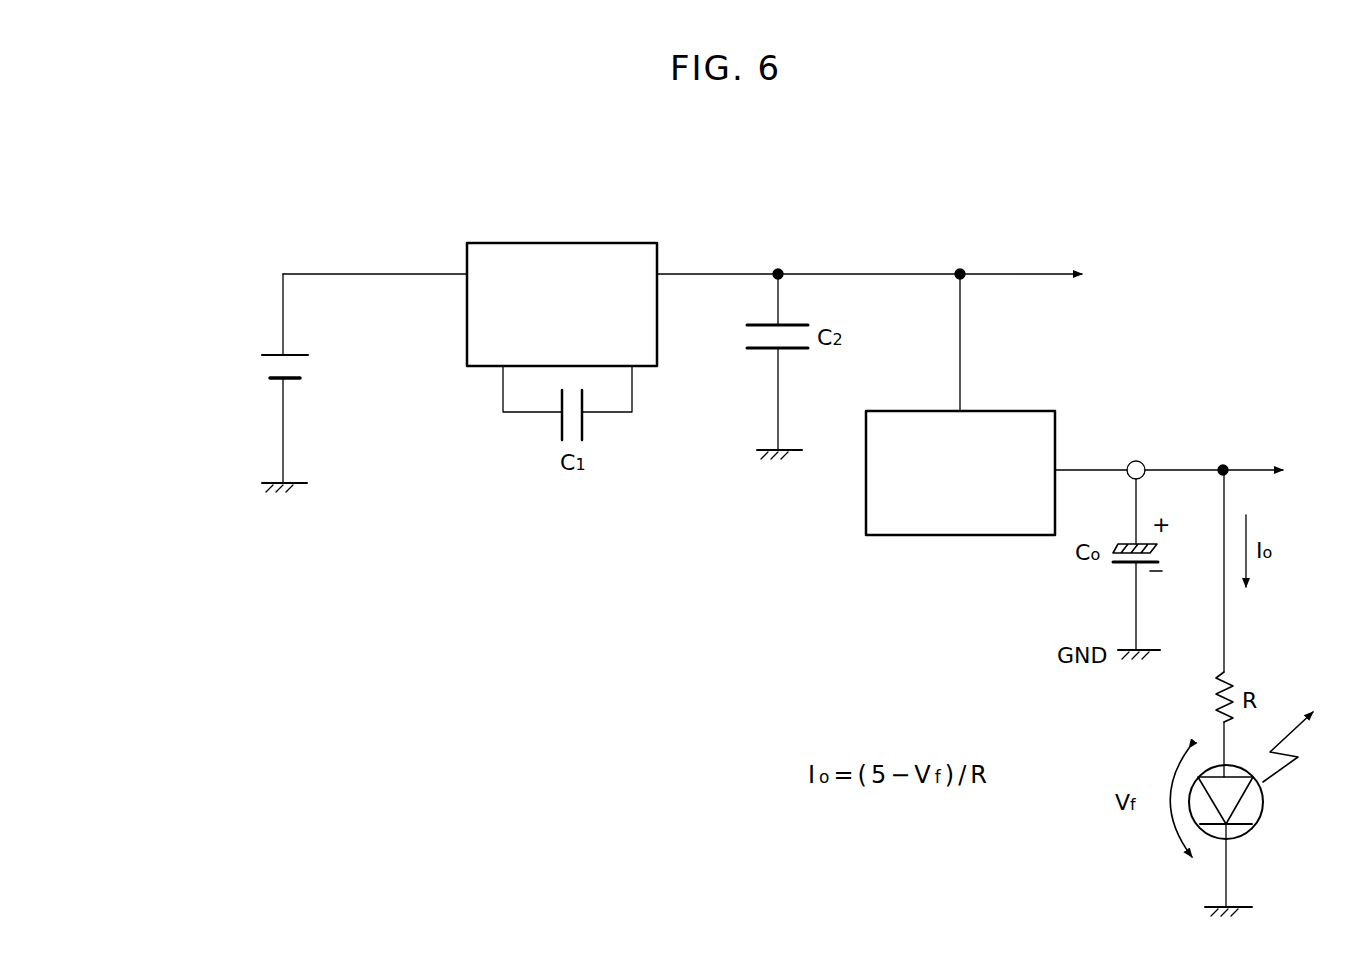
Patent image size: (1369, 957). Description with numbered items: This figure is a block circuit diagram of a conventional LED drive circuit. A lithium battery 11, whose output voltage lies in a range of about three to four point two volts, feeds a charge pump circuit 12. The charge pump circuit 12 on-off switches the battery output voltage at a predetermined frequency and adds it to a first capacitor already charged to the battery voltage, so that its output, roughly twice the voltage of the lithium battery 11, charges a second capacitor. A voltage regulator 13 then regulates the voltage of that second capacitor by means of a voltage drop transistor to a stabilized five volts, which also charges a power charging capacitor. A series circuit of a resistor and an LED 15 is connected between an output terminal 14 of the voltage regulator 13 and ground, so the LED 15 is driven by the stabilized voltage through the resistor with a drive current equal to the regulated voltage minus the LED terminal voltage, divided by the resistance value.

The lithium battery 11 is at (272, 354).
The charge pump circuit 12 is at (587, 242).
The voltage regulator 13 is at (1032, 410).
The output terminal 14 is at (1137, 461).
The LED 15 is at (1263, 817).